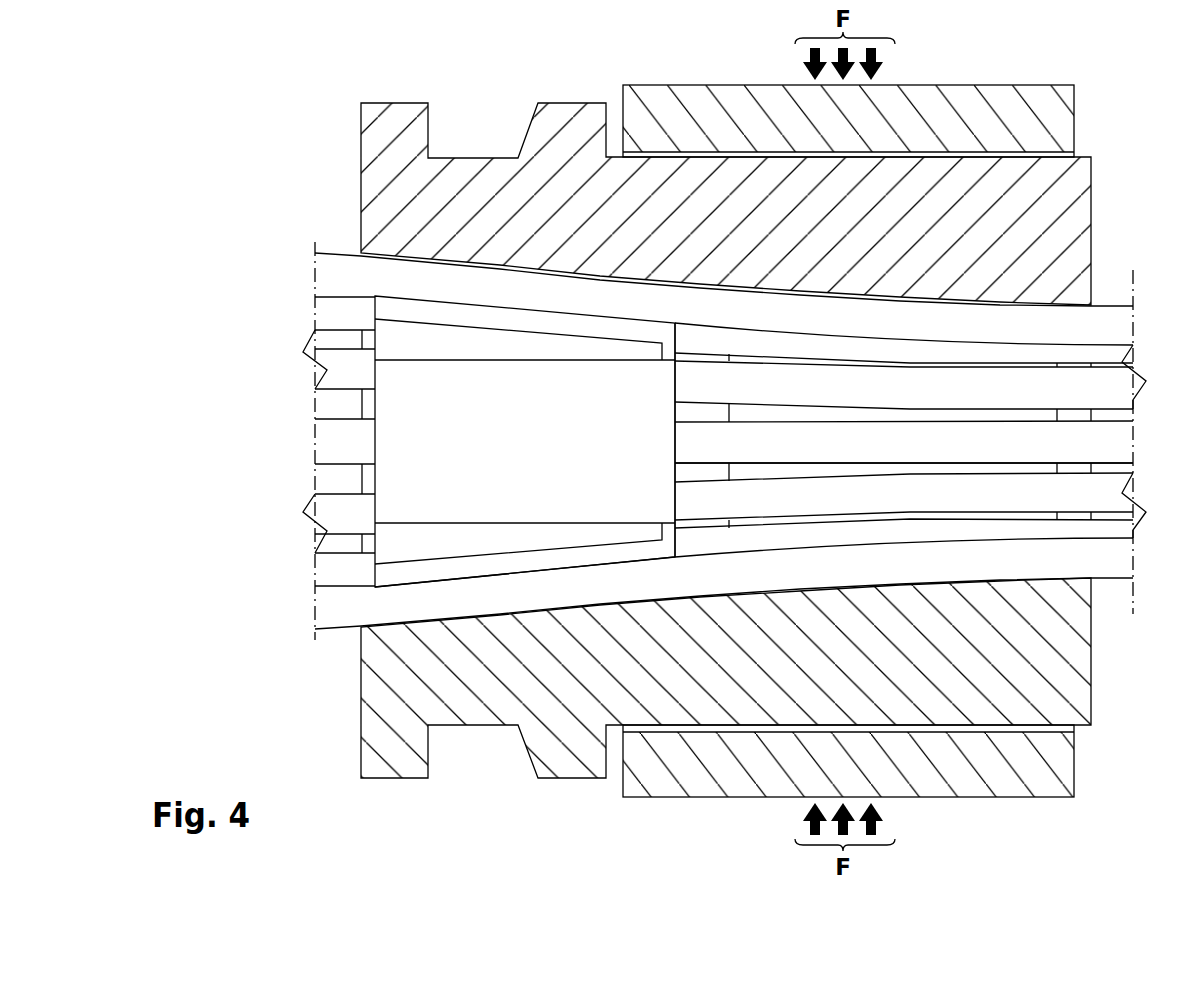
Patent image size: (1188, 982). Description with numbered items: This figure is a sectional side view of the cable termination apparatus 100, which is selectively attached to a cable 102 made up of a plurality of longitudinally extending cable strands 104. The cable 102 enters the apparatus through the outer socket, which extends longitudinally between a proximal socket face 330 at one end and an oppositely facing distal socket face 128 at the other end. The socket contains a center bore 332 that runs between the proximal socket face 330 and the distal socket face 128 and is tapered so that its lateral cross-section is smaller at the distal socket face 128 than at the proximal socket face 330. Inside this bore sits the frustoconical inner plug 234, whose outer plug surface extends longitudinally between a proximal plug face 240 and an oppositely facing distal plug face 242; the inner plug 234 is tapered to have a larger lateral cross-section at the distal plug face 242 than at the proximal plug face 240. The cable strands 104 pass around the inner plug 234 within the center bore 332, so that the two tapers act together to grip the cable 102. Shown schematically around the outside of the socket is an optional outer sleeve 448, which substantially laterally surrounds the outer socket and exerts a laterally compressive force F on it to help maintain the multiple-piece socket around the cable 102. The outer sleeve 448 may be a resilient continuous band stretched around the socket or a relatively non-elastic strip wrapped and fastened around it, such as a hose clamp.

The cable termination apparatus 100 is at (253, 78).
The cable 102 is at (334, 657).
The cable strands 104 is at (328, 560).
The distal socket face 128 is at (1091, 655).
The frustoconical inner plug 234 is at (524, 592).
The proximal plug face 240 is at (373, 543).
The distal plug face 242 is at (675, 470).
The proximal socket face 330 is at (362, 727).
The center bore 332 is at (837, 463).
The outer sleeve 448 is at (1008, 118).